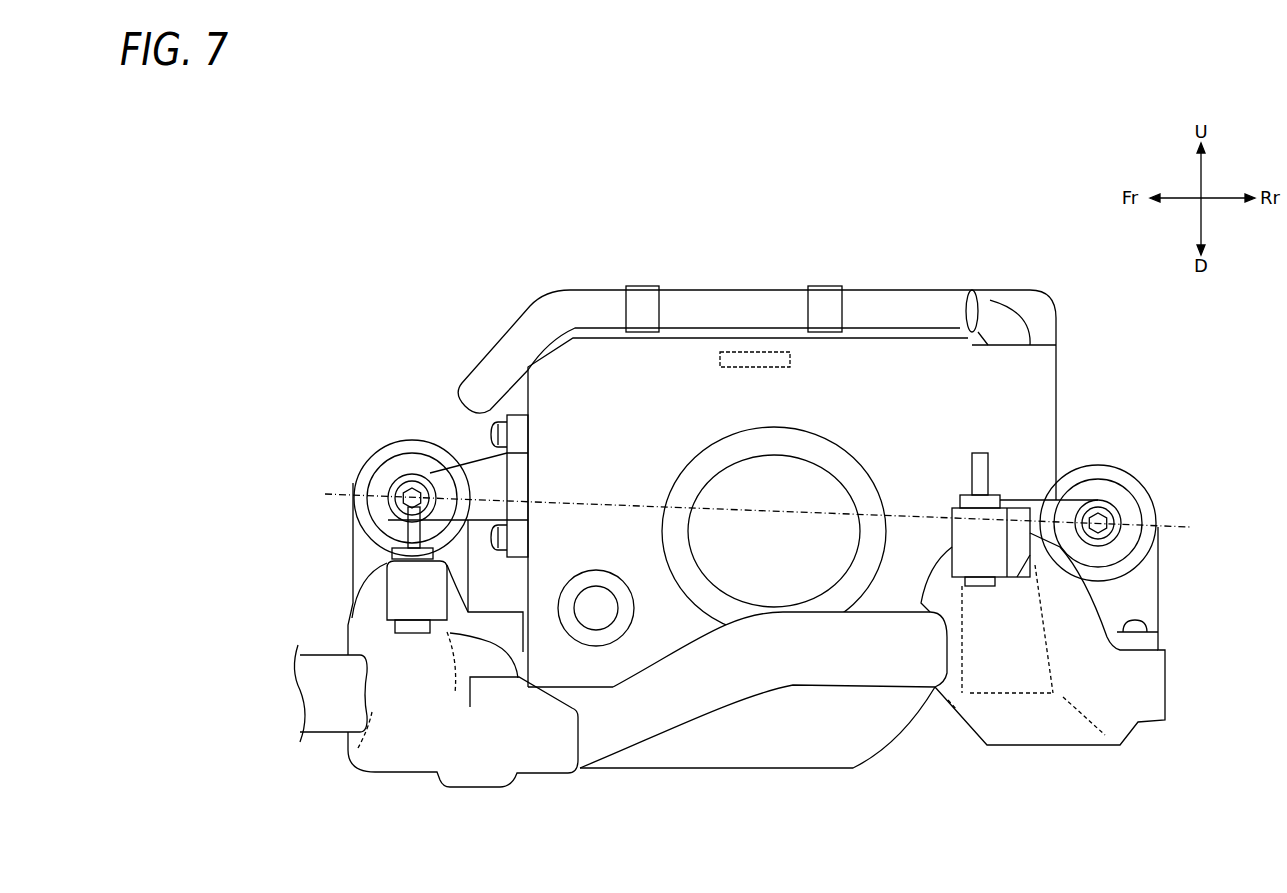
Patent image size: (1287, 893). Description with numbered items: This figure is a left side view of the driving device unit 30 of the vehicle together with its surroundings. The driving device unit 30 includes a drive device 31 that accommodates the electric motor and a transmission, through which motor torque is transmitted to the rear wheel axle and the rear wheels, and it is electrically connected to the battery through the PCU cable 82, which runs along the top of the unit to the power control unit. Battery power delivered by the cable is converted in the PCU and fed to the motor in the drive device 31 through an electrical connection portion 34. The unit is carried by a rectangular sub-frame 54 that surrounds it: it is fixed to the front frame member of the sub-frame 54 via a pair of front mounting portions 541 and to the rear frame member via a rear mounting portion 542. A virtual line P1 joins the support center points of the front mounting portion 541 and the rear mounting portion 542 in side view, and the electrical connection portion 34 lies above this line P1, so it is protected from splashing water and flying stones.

The driving device unit 30 is at (1068, 388).
The drive device 31 is at (582, 427).
The electrical connection portion 34 is at (752, 347).
The PCU cable 82 is at (866, 286).
The sub-frame 54 is at (1178, 676).
The front mounting portion 541 is at (353, 518).
The rear mounting portion 542 is at (1160, 565).
The virtual line P1 is at (1130, 472).